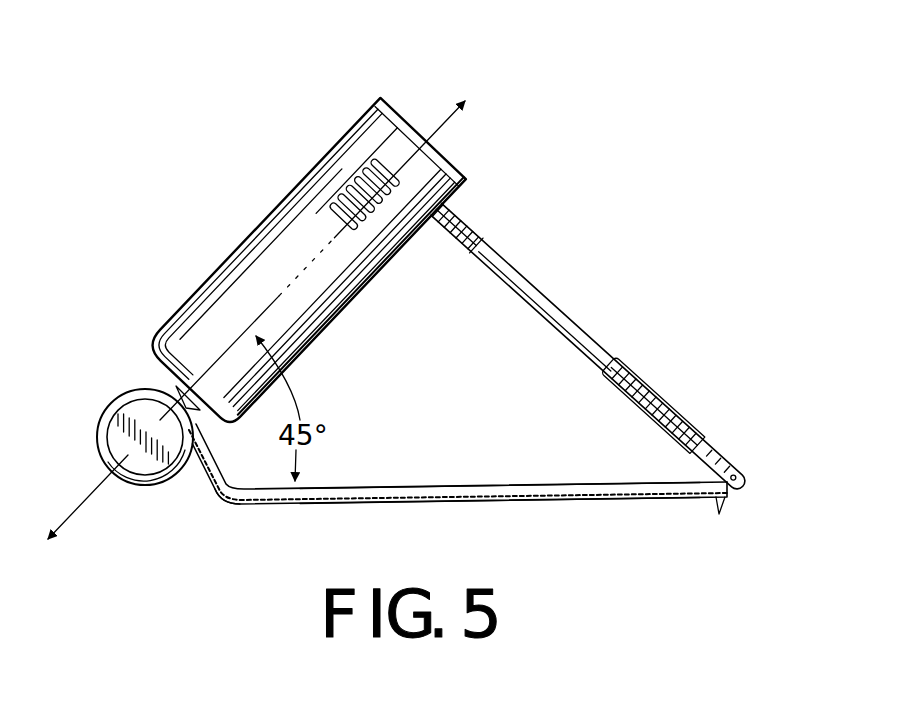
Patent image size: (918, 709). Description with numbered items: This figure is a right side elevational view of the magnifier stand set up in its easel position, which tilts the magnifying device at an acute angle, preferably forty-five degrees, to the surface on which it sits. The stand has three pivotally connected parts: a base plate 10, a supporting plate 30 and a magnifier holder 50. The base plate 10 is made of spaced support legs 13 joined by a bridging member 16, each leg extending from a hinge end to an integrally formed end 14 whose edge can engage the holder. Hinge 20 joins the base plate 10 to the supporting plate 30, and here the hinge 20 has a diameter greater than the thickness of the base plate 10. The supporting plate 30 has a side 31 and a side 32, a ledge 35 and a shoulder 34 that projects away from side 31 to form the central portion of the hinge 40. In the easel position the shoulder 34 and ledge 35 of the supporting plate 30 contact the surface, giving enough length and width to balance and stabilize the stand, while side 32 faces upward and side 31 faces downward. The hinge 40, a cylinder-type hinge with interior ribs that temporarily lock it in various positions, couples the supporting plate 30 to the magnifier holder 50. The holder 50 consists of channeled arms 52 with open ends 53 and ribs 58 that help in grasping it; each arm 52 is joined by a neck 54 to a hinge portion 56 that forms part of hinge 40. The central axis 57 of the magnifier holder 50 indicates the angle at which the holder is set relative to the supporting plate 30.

The base plate 10 is at (562, 305).
The support leg 13 is at (534, 308).
The end 14 is at (492, 249).
The bridging member 16 is at (664, 400).
The hinge 20 is at (750, 477).
The supporting plate 30 is at (308, 507).
The side 31 is at (602, 500).
The side 32 is at (416, 486).
The shoulder 34 is at (214, 502).
The ledge 35 is at (722, 515).
The hinge 40 is at (108, 398).
The magnifier holder 50 is at (272, 213).
The channeled arm 52 is at (232, 300).
The open end 53 is at (402, 110).
The neck 54 is at (174, 389).
The hinge portion 56 is at (128, 478).
The central axis 57 is at (334, 249).
The rib 58 is at (357, 167).